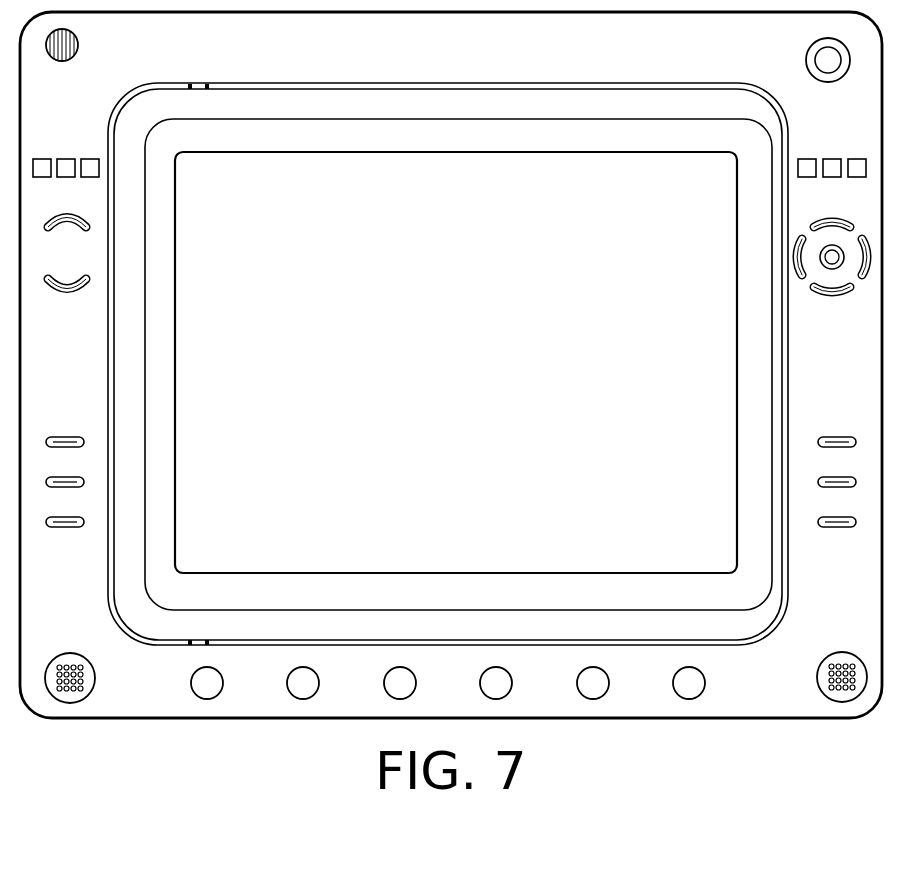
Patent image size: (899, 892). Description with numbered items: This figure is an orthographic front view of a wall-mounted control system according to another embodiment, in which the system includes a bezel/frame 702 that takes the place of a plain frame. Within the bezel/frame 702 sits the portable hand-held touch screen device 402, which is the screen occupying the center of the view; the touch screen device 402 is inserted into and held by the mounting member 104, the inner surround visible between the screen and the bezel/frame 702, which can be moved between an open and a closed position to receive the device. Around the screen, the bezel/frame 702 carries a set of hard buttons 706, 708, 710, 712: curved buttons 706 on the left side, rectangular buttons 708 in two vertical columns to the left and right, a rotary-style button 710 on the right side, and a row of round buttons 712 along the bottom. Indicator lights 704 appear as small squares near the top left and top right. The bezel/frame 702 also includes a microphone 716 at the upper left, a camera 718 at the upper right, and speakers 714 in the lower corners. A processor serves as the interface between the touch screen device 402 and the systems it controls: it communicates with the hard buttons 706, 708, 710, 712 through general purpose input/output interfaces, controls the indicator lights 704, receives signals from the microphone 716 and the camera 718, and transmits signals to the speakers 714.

The bezel/frame 702 is at (458, 56).
The mounting member 104 is at (128, 297).
The portable hand-held touch screen device 402 is at (474, 372).
The indicator lights 704 is at (91, 159).
The hard buttons 706 is at (76, 294).
The hard buttons 708 is at (68, 530).
The hard buttons 710 is at (840, 297).
The hard buttons 712 is at (191, 683).
The speakers 714 is at (840, 652).
The microphone 716 is at (80, 41).
The camera 718 is at (808, 52).